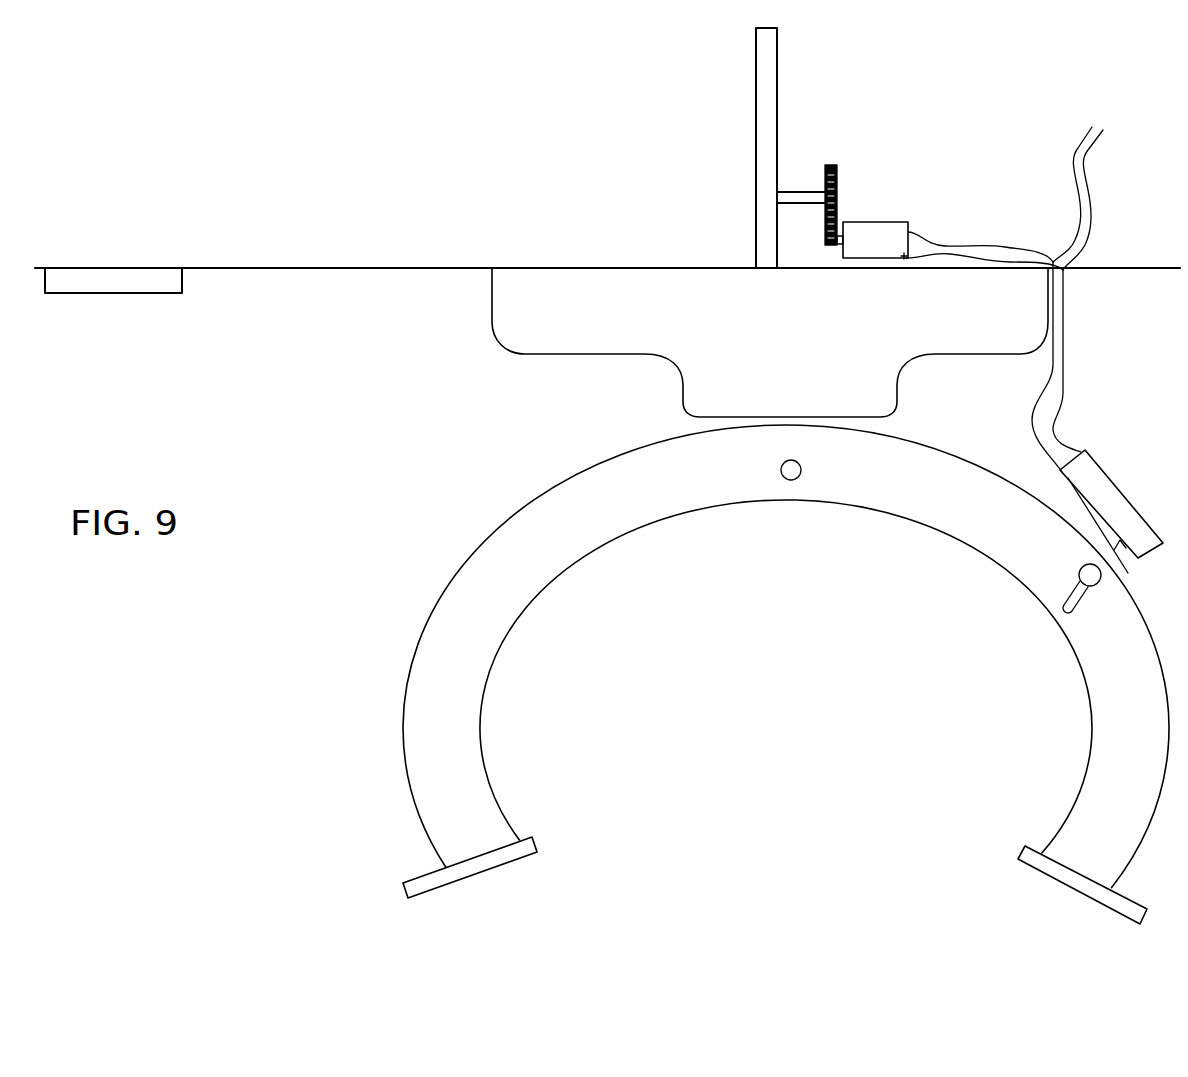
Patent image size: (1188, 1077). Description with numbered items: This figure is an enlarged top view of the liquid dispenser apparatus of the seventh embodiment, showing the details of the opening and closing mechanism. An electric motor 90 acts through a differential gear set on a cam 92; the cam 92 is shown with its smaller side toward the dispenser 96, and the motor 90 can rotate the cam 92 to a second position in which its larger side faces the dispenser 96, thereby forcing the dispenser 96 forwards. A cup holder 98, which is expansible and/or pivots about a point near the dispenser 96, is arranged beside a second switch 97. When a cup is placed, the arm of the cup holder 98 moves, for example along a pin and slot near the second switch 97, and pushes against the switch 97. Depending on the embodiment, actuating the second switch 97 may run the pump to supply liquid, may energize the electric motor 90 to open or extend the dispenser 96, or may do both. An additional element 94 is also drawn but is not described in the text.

The electric motor 90 is at (884, 219).
The cam 92 is at (745, 83).
The block 94 is at (123, 314).
The dispenser 96 is at (478, 343).
The second switch 97 is at (1104, 417).
The cup holder 98 is at (392, 733).